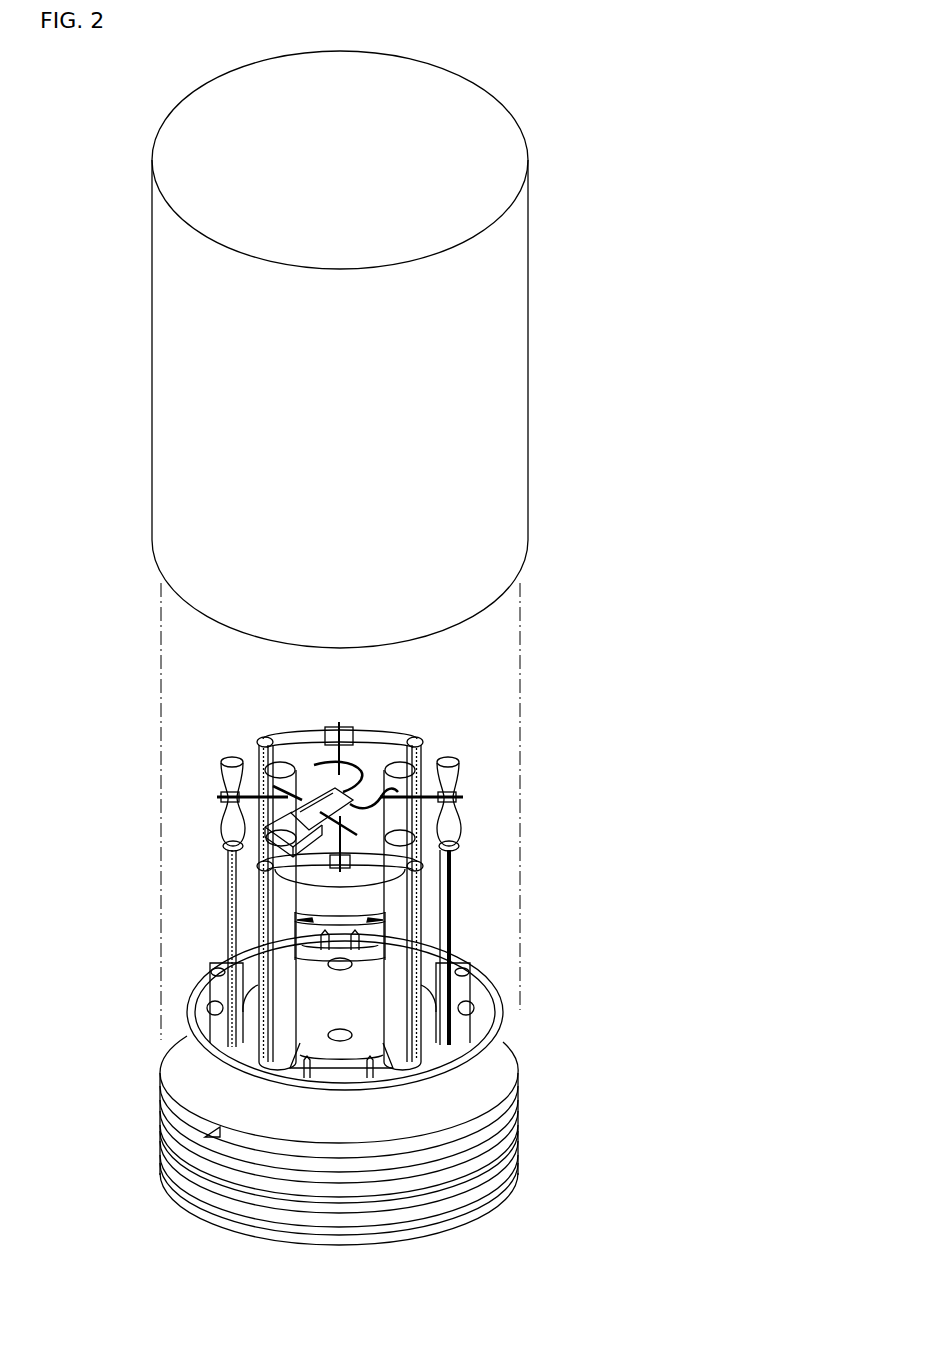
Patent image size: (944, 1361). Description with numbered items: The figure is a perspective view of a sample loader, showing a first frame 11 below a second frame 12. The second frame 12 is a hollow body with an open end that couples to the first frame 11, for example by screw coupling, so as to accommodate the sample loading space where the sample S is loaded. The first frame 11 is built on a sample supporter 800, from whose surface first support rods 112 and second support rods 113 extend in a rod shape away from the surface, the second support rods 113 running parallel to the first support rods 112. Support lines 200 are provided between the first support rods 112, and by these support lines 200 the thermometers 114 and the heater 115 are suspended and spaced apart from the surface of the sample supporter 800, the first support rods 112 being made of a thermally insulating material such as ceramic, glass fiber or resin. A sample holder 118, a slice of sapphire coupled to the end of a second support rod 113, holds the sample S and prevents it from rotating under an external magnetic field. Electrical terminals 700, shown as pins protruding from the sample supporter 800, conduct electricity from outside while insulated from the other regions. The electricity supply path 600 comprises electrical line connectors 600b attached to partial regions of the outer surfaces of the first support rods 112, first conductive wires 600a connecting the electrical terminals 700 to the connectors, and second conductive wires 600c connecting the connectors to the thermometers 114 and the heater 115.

The second frame 12 is at (572, 282).
The first frame 11 is at (545, 746).
The second support rods 113 is at (302, 764).
The heater 115 is at (357, 724).
The first support rods 112 is at (432, 748).
The sample S is at (293, 783).
The sample holder 118 is at (266, 822).
The support lines 200 is at (405, 848).
The thermometers 114 is at (335, 876).
The electrical terminals 700 is at (300, 943).
The guide rod assembly 600 is at (616, 893).
The first conductive wires 600a is at (408, 1080).
The electrical line connectors 600b is at (455, 958).
The second conductive wires 600c is at (410, 878).
The sample supporter 800 is at (160, 1125).